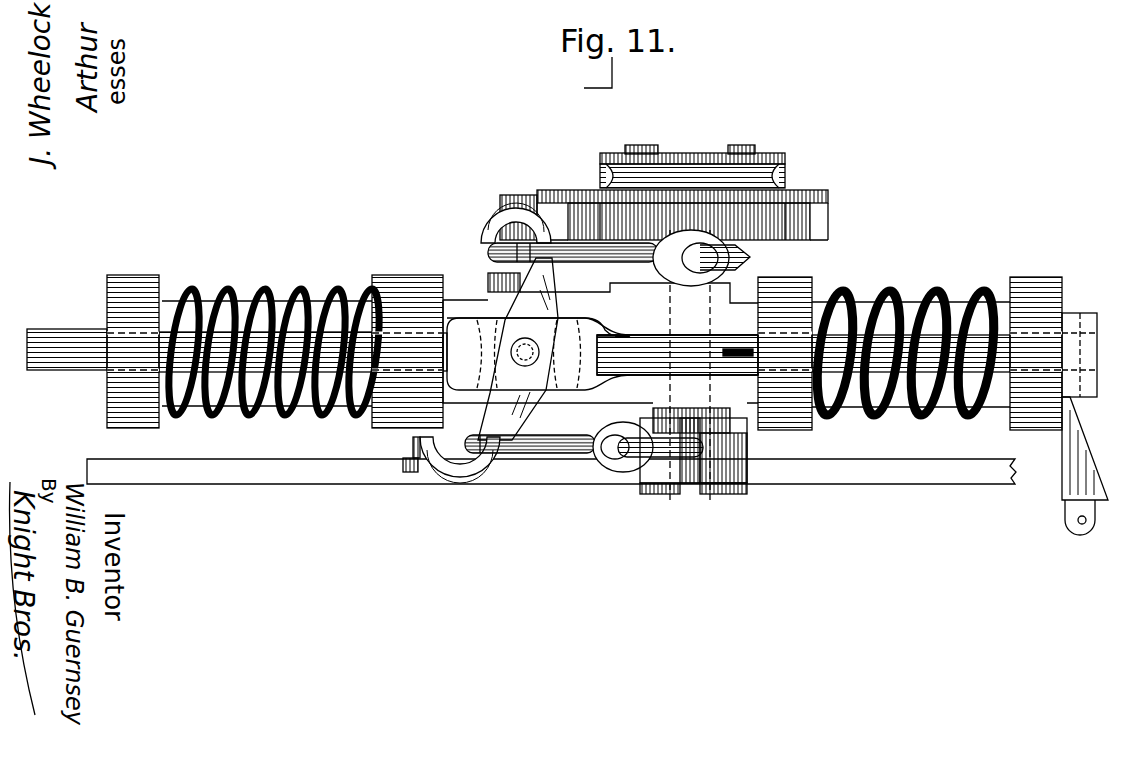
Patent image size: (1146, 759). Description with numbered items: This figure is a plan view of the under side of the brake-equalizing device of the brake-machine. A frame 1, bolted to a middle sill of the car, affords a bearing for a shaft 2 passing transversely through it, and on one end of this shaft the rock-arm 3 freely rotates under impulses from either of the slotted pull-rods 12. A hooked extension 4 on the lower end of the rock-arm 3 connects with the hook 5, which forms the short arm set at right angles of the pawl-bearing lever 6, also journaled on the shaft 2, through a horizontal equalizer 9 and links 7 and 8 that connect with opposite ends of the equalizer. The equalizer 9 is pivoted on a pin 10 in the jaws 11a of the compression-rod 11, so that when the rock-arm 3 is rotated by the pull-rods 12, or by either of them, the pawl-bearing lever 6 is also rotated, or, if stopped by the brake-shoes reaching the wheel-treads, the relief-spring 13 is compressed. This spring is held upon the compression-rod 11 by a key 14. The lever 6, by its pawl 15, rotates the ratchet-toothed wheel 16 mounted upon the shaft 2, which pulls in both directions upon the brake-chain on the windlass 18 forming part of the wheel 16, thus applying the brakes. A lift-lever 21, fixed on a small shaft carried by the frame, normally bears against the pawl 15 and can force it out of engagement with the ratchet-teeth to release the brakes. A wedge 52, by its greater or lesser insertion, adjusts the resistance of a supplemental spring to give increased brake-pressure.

The frame 1 is at (398, 418).
The shaft 2 is at (688, 483).
The rock-arm 3 is at (745, 470).
The hooked extension 4 is at (632, 475).
The hook 5 is at (752, 257).
The pawl-bearing lever 6 is at (488, 254).
The link 7 is at (555, 455).
The link 8 is at (608, 262).
The horizontal equalizer 9 is at (505, 305).
The pin 10 is at (540, 352).
The compression-rod 11 is at (722, 366).
The jaws 11a is at (585, 320).
The pull-rod 12 is at (330, 484).
The relief-spring 13 is at (276, 405).
The key 14 is at (459, 352).
The pawl 15 is at (500, 205).
The ratchet-toothed wheel 16 is at (561, 190).
The windlass 18 is at (770, 161).
The lift-lever 21 is at (488, 283).
The wedge 52 is at (1106, 490).